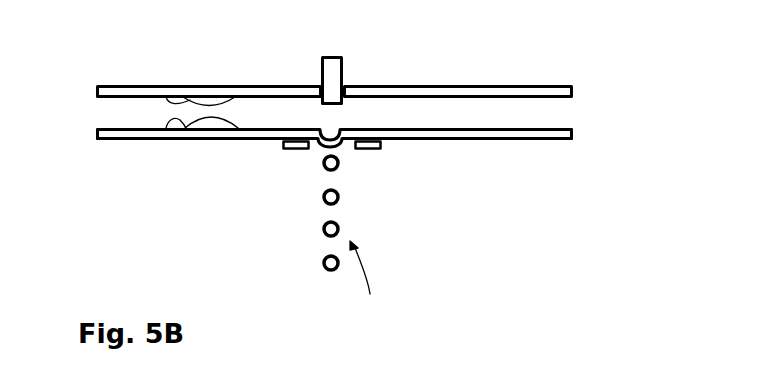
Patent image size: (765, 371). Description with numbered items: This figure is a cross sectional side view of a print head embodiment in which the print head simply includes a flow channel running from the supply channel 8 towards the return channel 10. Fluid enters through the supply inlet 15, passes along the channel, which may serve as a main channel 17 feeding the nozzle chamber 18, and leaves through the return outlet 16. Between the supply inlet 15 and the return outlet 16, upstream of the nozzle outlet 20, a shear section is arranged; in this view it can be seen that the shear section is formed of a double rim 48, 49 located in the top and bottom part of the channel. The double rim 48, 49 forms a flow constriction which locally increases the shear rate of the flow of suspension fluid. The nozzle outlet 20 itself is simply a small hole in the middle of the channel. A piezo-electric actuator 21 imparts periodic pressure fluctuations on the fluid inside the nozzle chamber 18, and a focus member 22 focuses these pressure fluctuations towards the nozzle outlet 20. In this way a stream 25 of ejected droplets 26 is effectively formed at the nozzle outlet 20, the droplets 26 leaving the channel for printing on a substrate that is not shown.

The supply channel 8 is at (316, 74).
The return channel 10 is at (368, 183).
The supply inlet 15 is at (108, 85).
The return outlet 16 is at (558, 84).
The main channel 17 is at (488, 119).
The nozzle chamber 18 is at (306, 110).
The nozzle outlet 20 is at (333, 137).
The actuator 21 is at (292, 151).
The focus member 22 is at (345, 80).
The stream 25 is at (366, 282).
The droplets 26 is at (323, 228).
The double rim 48 is at (165, 86).
The double rim 49 is at (166, 130).